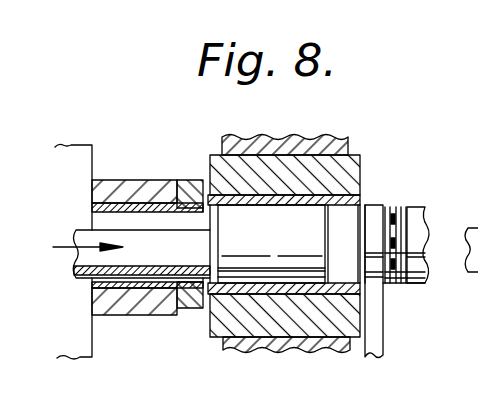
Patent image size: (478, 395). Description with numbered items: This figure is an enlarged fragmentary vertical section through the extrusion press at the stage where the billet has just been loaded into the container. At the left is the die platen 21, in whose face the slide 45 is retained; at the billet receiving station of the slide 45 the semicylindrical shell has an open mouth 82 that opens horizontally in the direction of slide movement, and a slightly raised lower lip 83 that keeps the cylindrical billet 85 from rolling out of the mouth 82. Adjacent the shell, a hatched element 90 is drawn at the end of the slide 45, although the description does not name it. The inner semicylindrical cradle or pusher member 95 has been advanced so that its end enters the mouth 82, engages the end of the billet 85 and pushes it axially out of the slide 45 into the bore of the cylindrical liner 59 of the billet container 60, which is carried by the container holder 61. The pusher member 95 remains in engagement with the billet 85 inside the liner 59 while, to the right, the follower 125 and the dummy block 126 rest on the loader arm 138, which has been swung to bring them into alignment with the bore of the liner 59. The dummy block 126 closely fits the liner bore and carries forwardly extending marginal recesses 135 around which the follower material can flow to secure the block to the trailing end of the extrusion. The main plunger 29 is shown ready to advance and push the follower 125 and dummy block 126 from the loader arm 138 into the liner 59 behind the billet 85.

The die platen 21 is at (78, 145).
The slide 45 is at (115, 185).
The seal ring 90 is at (182, 187).
The mouth 82 is at (107, 217).
The lower lip 83 is at (94, 277).
The inner semicylindrical cradle or pusher member 95 is at (190, 268).
The billet 85 is at (294, 235).
The container holder 61 is at (292, 137).
The liner 59 is at (319, 195).
The billet container 60 is at (361, 159).
The follower 125 is at (372, 207).
The dummy block 126 is at (393, 207).
The marginal recesses 135 is at (418, 220).
The main plunger 29 is at (412, 285).
The loader arm 138 is at (381, 357).